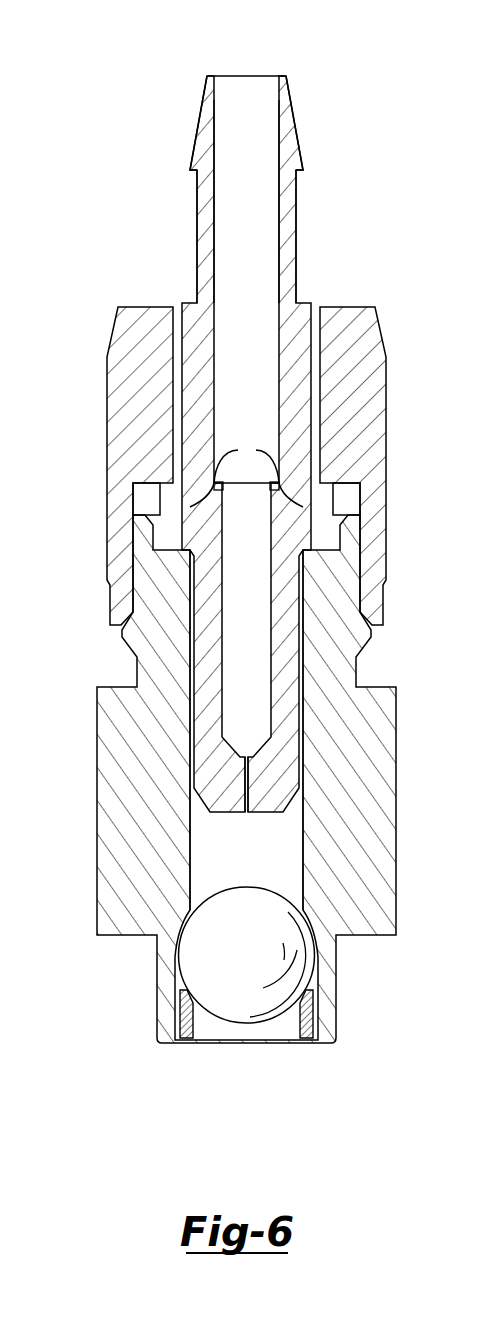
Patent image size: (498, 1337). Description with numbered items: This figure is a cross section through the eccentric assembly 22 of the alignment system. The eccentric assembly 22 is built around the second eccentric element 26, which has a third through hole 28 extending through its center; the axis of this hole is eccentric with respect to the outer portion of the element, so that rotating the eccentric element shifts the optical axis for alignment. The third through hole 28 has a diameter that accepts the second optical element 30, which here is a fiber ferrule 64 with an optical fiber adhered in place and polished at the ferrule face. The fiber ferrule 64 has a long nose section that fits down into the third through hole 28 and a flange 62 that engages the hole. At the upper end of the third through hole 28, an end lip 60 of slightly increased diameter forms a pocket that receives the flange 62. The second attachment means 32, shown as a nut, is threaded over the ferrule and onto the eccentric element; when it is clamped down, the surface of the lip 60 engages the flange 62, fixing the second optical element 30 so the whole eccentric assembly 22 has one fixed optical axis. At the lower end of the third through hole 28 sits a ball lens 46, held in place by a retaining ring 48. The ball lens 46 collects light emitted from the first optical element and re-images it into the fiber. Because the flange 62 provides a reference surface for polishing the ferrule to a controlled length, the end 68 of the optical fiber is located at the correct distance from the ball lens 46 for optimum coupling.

The eccentric assembly 22 is at (253, 658).
The second eccentric element 26 is at (103, 706).
The third through hole 28 is at (288, 857).
The second optical element 30 is at (210, 147).
The second attachment means 32 is at (107, 378).
The ball lens 46 is at (265, 965).
The retaining ring 48 is at (192, 1040).
The end lip 60 is at (143, 538).
The flange 62 is at (246, 473).
The fiber ferrule 64 is at (253, 230).
The end of the optical fiber 68 is at (248, 815).